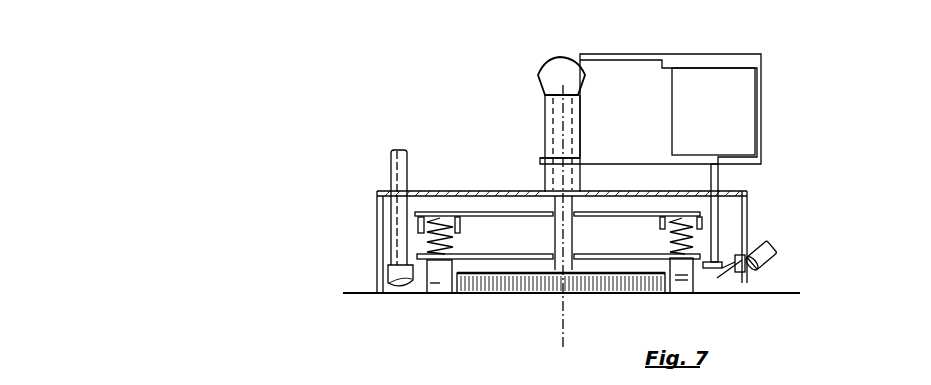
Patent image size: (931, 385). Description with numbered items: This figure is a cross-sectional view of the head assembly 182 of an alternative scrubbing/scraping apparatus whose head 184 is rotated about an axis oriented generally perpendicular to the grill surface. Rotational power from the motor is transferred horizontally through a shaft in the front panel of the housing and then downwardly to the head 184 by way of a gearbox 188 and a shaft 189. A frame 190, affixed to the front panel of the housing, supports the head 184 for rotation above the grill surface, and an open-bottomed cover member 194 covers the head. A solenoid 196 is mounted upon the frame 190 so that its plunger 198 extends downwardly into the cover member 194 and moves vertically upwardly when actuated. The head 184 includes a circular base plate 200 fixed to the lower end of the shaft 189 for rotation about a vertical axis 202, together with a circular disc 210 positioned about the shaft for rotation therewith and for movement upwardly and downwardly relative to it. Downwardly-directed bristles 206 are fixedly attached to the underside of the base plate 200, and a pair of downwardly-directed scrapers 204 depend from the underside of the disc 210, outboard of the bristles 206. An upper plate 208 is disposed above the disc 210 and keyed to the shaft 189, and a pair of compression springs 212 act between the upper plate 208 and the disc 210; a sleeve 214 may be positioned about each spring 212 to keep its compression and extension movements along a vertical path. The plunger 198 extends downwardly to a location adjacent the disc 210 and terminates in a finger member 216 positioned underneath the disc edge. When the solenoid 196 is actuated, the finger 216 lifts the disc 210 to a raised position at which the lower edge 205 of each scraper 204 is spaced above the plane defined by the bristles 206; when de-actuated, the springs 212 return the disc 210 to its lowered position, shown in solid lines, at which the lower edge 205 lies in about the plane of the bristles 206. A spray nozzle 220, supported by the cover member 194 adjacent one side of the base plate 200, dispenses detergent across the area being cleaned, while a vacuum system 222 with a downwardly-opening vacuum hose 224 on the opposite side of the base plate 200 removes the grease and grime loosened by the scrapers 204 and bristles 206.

The head assembly 182 is at (362, 242).
The head 184 is at (418, 207).
The gearbox 188 is at (550, 70).
The shaft 189 is at (546, 118).
The frame 190 is at (627, 55).
The cover member 194 is at (378, 217).
The solenoid 196 is at (743, 102).
The plunger 198 is at (720, 182).
The circular base plate 200 is at (638, 288).
The vertical axis 202 is at (560, 327).
The scrapers 204 is at (438, 281).
The lower edge 205 is at (437, 281).
The bristles 206 is at (583, 294).
The upper plate 208 is at (489, 212).
The circular disc 210 is at (584, 253).
The compression springs 212 is at (452, 238).
The sleeve 214 is at (660, 222).
The finger member 216 is at (710, 252).
The spray nozzle 220 is at (718, 280).
The vacuum system 222 is at (387, 165).
The vacuum hose 224 is at (388, 268).